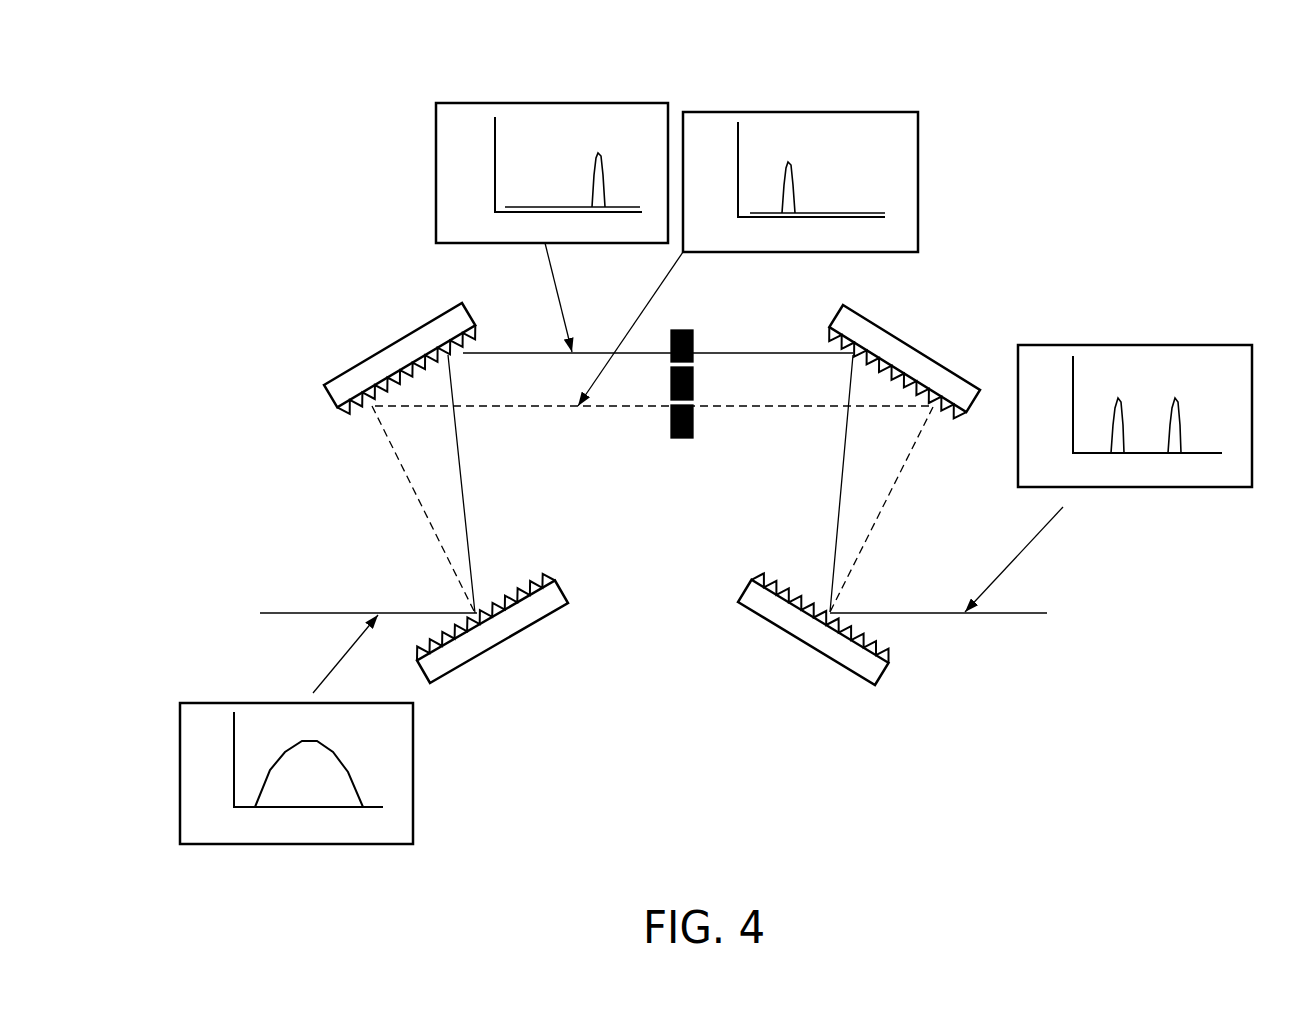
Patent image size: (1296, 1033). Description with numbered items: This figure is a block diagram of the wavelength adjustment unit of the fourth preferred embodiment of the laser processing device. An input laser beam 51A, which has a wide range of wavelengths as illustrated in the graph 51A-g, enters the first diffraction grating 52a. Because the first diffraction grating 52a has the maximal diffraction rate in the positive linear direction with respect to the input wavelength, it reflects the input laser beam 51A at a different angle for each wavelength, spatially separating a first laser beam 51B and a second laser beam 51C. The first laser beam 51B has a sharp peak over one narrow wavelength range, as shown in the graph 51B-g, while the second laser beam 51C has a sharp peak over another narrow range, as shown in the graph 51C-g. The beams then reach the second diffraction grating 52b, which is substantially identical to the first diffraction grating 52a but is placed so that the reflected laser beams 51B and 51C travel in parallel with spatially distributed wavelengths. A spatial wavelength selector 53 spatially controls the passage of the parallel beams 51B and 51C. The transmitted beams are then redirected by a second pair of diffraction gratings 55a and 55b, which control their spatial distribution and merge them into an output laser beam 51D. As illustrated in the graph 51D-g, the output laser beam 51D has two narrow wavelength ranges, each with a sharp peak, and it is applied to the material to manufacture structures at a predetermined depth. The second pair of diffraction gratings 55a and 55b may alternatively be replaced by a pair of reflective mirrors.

The input laser beam 51A is at (302, 613).
The first laser beam 51B is at (467, 507).
The second laser beam 51C is at (415, 495).
The output laser beam 51D is at (927, 613).
The graph 51A-g is at (413, 777).
The graph 51B-g is at (602, 103).
The graph 51C-g is at (852, 112).
The graph 51D-g is at (1135, 345).
The first diffraction grating 52a is at (445, 667).
The second diffraction grating 52b is at (373, 355).
The spatial wavelength selector 53 is at (683, 440).
The diffraction grating 55a is at (837, 657).
The diffraction grating 55b is at (907, 343).